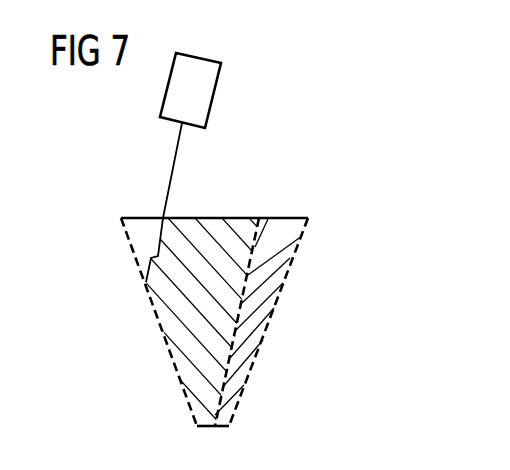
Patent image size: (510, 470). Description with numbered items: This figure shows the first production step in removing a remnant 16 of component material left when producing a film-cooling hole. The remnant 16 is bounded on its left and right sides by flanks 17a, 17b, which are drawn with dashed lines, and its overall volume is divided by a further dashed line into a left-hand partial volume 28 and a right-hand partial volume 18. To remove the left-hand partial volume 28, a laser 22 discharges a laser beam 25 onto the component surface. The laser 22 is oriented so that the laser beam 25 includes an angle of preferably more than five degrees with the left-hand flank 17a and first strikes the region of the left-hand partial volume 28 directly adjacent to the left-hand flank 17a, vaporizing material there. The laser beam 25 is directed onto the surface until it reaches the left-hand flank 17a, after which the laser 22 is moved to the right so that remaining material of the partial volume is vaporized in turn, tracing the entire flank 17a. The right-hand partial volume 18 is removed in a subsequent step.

The remnant 16 is at (238, 186).
The left-hand flank 17a is at (150, 300).
The right-hand flank 17b is at (278, 302).
The right-hand partial volume 18 is at (285, 230).
The laser 22 is at (216, 83).
The laser beam 25 is at (172, 172).
The left-hand partial volume 28 is at (207, 229).